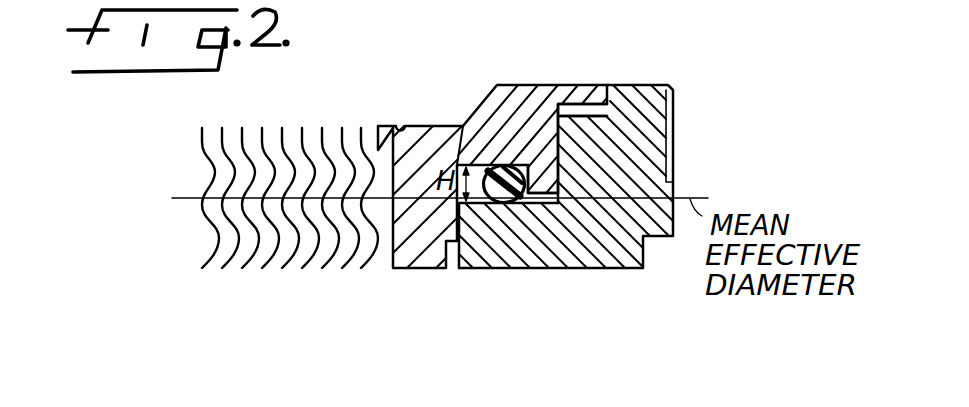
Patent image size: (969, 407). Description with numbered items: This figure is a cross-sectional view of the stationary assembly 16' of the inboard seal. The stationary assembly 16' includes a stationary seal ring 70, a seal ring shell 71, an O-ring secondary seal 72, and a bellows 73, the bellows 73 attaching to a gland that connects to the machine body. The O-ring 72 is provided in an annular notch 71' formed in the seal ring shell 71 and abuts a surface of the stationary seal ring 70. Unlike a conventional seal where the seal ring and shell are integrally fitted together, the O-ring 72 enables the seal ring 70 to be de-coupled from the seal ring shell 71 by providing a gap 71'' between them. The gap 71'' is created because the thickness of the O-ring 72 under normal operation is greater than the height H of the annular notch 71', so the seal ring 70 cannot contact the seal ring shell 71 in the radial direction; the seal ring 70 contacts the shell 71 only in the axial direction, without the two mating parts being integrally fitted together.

The bellows 73 is at (283, 138).
The seal ring shell 71 is at (527, 118).
The annular notch 71' is at (567, 113).
The gap 71'' is at (633, 176).
The stationary seal ring 70 is at (664, 142).
The stationary assembly 16' is at (496, 277).
The O-ring secondary seal 72 is at (512, 203).